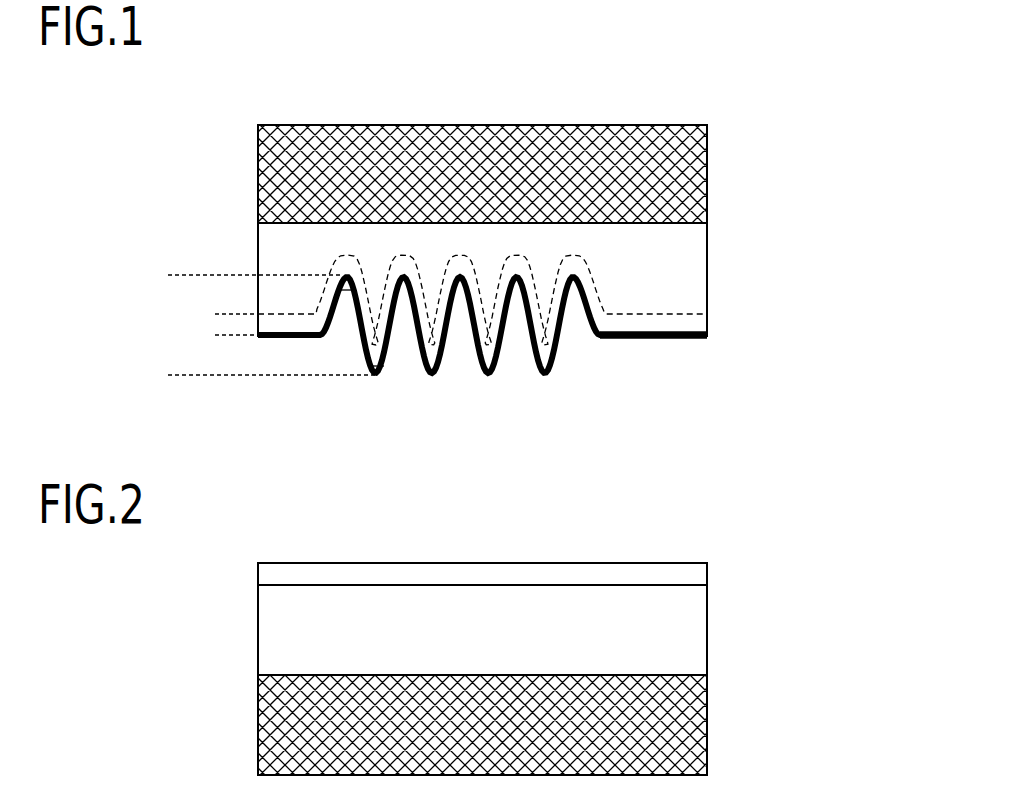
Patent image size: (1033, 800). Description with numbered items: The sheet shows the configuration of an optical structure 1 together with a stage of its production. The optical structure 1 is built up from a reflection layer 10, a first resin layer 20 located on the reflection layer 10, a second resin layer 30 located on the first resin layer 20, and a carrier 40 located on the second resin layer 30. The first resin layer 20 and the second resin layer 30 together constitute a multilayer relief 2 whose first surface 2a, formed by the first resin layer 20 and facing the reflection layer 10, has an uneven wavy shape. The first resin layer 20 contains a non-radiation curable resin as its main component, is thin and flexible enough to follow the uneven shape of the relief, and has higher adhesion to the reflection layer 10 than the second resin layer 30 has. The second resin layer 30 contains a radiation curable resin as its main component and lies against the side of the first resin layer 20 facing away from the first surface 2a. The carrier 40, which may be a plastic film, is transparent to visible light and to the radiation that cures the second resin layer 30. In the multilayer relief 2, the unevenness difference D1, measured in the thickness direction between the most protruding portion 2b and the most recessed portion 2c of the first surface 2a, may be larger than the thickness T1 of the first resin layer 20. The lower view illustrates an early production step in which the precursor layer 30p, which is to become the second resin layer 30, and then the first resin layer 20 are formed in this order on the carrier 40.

In FIG. 1, the optical structure 1 is at (694, 105).
In FIG. 1, the multilayer relief 2 is at (543, 314).
In FIG. 1, the first surface 2a is at (640, 329).
In FIG. 1, the most protruding portion 2b is at (373, 384).
In FIG. 1, the most recessed portion 2c is at (345, 310).
In FIG. 1, the reflection layer 10 is at (660, 338).
In FIG. 1, the first resin layer 20 is at (683, 327).
In FIG. 2, the first resin layer 20 is at (708, 572).
In FIG. 1, the second resin layer 30 is at (675, 275).
In FIG. 2, the precursor layer 30p is at (708, 628).
In FIG. 1, the carrier 40 is at (682, 172).
In FIG. 2, the carrier 40 is at (708, 723).
In FIG. 1, the unevenness difference D1 is at (177, 276).
In FIG. 1, the thickness of the first resin layer T1 is at (226, 288).